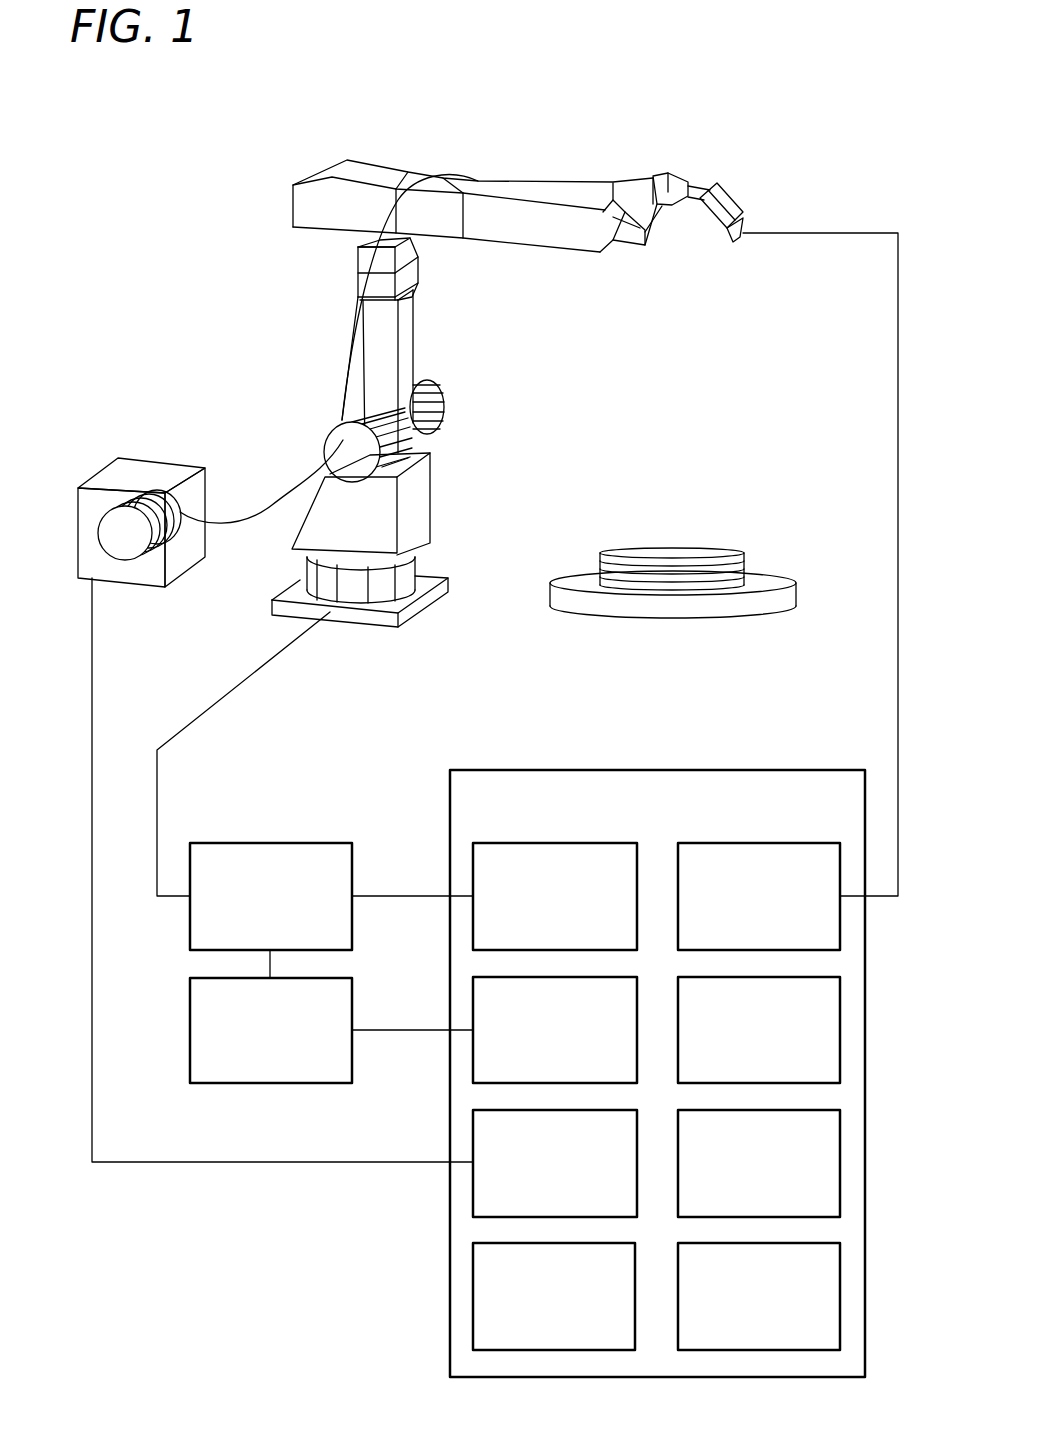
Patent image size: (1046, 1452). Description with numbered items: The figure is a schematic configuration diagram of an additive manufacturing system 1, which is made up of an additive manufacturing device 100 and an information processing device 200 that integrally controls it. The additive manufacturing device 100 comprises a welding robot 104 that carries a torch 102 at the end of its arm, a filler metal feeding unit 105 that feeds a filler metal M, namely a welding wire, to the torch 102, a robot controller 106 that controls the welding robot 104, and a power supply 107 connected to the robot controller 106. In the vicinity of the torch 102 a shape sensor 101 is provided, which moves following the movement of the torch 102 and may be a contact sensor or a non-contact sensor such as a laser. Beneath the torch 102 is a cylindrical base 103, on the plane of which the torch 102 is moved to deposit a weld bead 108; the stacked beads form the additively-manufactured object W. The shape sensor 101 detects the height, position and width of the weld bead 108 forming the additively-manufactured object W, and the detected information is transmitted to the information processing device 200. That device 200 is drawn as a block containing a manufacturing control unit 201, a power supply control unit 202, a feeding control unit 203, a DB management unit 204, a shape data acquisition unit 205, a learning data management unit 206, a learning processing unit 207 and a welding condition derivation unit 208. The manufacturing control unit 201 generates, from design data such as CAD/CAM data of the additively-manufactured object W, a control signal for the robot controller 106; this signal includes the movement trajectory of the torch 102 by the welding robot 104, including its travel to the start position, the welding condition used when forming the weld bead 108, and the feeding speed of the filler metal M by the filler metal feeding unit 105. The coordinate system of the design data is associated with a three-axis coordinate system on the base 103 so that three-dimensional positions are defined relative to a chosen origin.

The additive manufacturing system 1 is at (783, 124).
The additive manufacturing device 100 is at (306, 128).
The shape sensor 101 is at (752, 222).
The torch 102 is at (732, 248).
The base 103 is at (775, 580).
The welding robot 104 is at (377, 200).
The filler metal feeding unit 105 is at (153, 458).
The robot controller 106 is at (270, 843).
The power supply 107 is at (352, 998).
The weld bead 108 is at (612, 548).
The information processing device 200 is at (657, 770).
The manufacturing control unit 201 is at (473, 858).
The power supply control unit 202 is at (473, 1055).
The feeding control unit 203 is at (473, 1140).
The DB management unit 204 is at (473, 1293).
The shape data acquisition unit 205 is at (840, 923).
The learning data management unit 206 is at (840, 1025).
The learning processing unit 207 is at (840, 1160).
The welding condition derivation unit 208 is at (840, 1293).
The filler metal M is at (594, 185).
The additively-manufactured object W is at (715, 478).